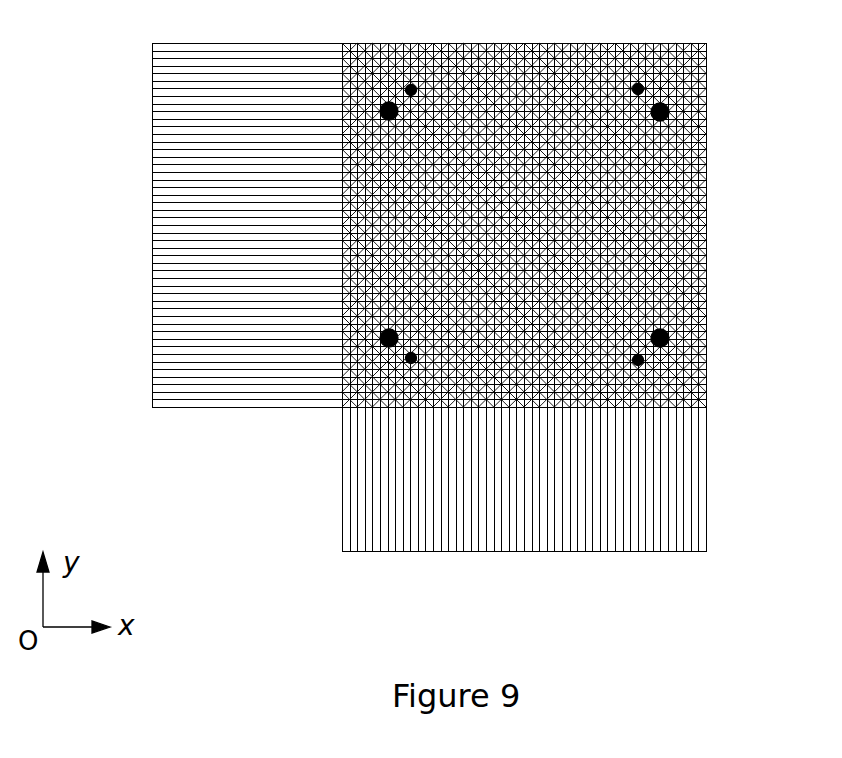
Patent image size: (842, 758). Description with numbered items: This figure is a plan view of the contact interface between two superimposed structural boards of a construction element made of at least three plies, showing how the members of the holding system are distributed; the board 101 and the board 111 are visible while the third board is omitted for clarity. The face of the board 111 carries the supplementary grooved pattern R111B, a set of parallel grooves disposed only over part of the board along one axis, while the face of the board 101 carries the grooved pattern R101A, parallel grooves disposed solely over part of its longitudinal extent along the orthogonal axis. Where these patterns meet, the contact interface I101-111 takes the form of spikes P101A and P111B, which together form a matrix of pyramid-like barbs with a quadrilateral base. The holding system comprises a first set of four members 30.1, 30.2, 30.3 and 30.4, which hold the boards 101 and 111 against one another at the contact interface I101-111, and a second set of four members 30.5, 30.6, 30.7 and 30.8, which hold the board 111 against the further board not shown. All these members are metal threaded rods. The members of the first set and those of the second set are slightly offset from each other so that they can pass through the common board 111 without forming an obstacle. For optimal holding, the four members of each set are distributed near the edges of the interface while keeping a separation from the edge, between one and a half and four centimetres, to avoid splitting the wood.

The board 101 is at (415, 488).
The board 111 is at (187, 325).
The member 30.1 is at (389, 104).
The member 30.2 is at (665, 117).
The member 30.3 is at (665, 343).
The member 30.4 is at (388, 338).
The member 30.5 is at (411, 90).
The member 30.6 is at (638, 89).
The member 30.7 is at (640, 362).
The member 30.8 is at (411, 358).
The contact interface I101-111 is at (508, 184).
The spike P111B is at (390, 208).
The supplementary grooved pattern R111B is at (258, 93).
The spike P101A is at (531, 300).
The grooved pattern R101A is at (645, 442).